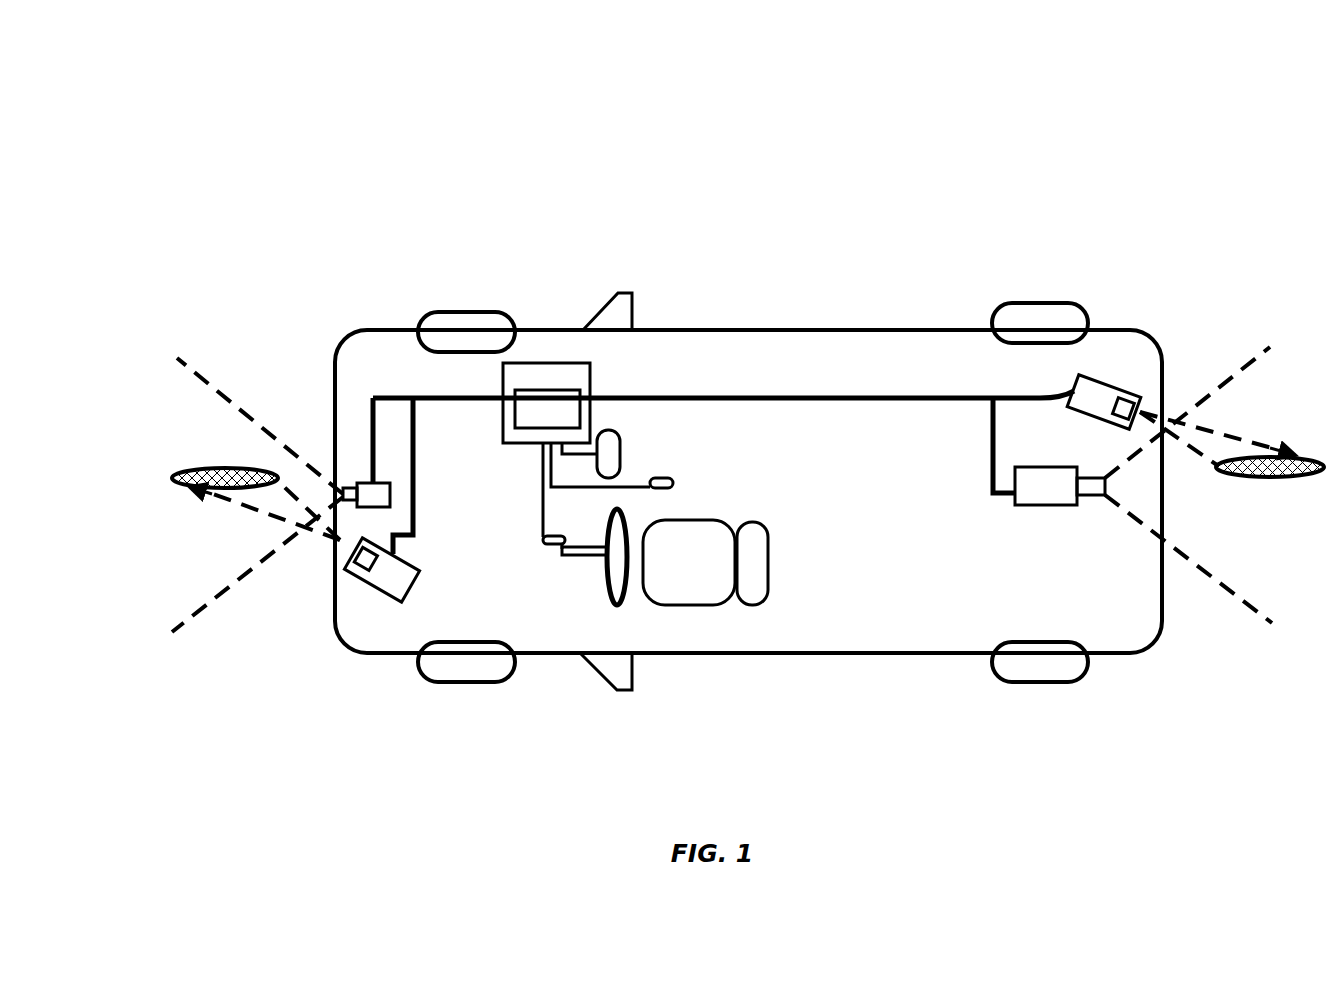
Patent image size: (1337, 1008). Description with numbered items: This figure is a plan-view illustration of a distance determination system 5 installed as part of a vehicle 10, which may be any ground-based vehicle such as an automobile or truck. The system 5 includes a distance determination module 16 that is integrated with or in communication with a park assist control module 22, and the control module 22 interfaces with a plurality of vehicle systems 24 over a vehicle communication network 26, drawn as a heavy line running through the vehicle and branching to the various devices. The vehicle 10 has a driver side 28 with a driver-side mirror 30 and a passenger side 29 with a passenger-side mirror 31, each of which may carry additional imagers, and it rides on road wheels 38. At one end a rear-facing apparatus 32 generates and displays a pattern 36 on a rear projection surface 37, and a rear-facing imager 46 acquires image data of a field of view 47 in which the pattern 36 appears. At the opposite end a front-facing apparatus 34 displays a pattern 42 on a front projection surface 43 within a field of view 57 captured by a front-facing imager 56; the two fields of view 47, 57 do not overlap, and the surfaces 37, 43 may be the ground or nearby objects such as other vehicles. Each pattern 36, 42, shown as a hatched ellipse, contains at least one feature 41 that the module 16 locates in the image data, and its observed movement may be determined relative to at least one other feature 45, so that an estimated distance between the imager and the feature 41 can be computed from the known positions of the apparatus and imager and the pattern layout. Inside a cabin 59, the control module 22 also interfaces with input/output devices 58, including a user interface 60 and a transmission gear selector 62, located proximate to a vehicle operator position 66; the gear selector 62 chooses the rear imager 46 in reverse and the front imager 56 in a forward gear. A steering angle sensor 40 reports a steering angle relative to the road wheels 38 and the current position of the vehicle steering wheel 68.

The distance determination system 5 is at (550, 126).
The vehicle 10 is at (795, 238).
The distance determination module 16 is at (547, 409).
The park assist control module 22 is at (590, 382).
The vehicle systems 24 is at (944, 350).
The vehicle communication network 26 is at (730, 398).
The driver side 28 is at (737, 655).
The passenger side 29 is at (787, 330).
The driver-side mirror 30 is at (598, 682).
The passenger-side mirror 31 is at (641, 290).
The rear-facing apparatus 32 is at (1112, 378).
The front-facing apparatus 34 is at (385, 600).
The pattern 36 is at (1285, 478).
The rear projection surface 37 is at (1219, 498).
The road wheels 38 is at (481, 312).
The steering angle sensor 40 is at (551, 536).
The feature 41 is at (197, 470).
The pattern 42 is at (177, 481).
The front projection surface 43 is at (254, 524).
The other feature 45 is at (261, 470).
The rear-facing imager 46 is at (1045, 506).
The field of view 47 is at (1265, 620).
The front-facing imager 56 is at (344, 488).
The field of view 57 is at (207, 606).
The input/output devices 58 is at (680, 454).
The cabin 59 is at (724, 510).
The user interface 60 is at (620, 438).
The transmission gear selector 62 is at (674, 480).
The vehicle operator position 66 is at (705, 562).
The vehicle steering wheel 68 is at (607, 578).